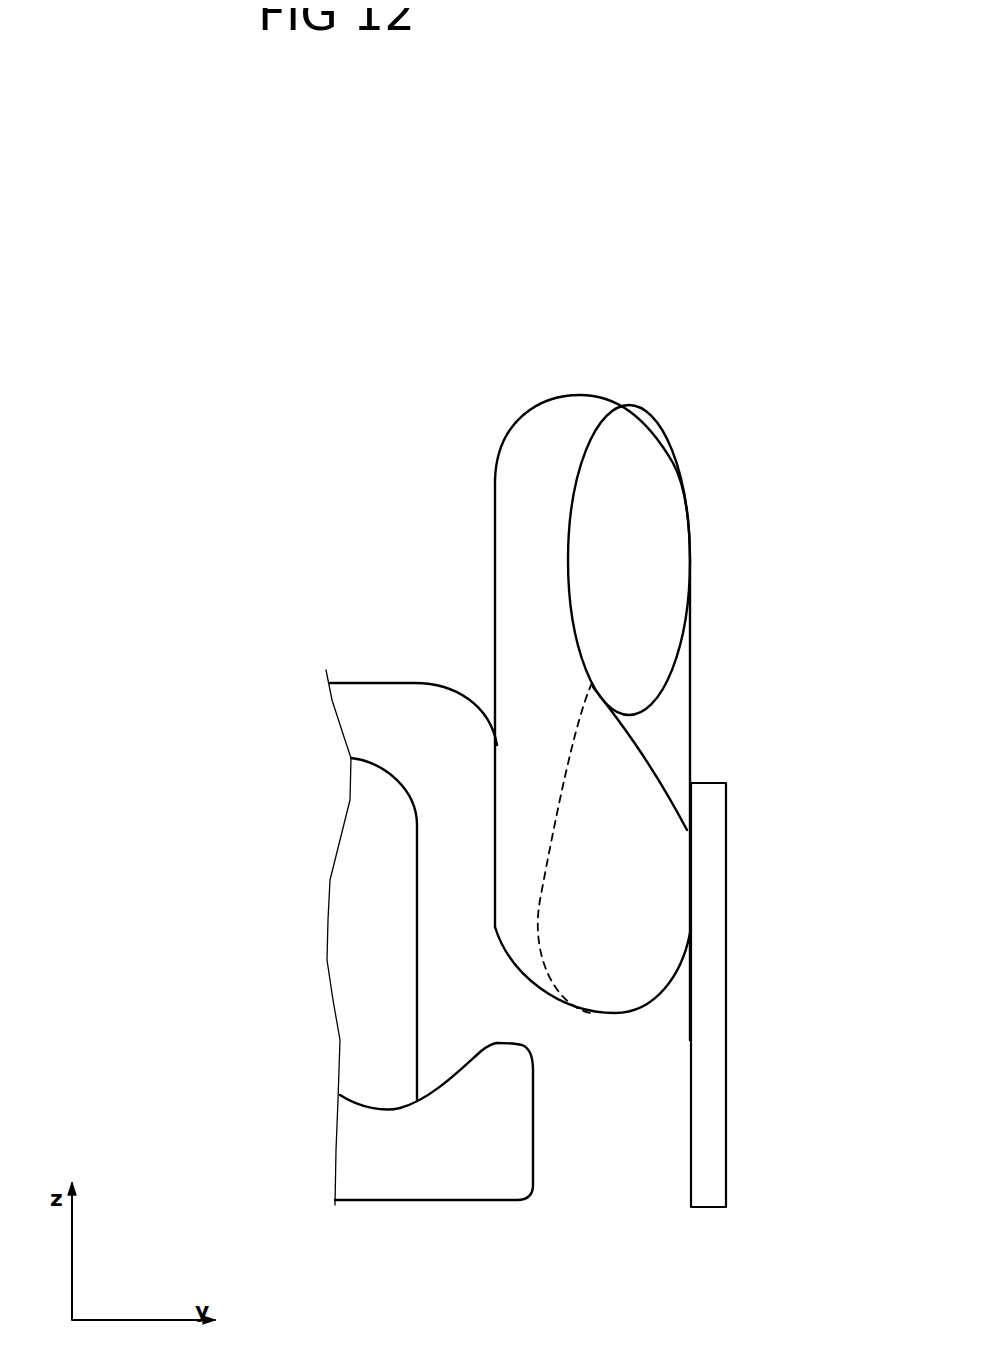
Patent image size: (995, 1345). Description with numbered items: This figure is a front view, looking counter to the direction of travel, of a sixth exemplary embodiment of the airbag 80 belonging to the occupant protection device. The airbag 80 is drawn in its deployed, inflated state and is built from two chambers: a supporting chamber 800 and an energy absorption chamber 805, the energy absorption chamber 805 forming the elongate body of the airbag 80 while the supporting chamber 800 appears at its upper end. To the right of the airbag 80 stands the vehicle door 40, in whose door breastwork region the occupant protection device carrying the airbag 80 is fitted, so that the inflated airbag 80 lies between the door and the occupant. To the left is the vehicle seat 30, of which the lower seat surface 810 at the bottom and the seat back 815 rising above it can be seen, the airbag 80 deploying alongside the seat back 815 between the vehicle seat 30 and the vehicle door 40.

The vehicle seat 30 is at (380, 982).
The vehicle door 40 is at (713, 1095).
The airbag 80 is at (600, 632).
The supporting chamber 800 is at (628, 378).
The energy absorption chamber 805 is at (527, 568).
The lower seat surface 810 is at (468, 1172).
The seat back 815 is at (400, 705).